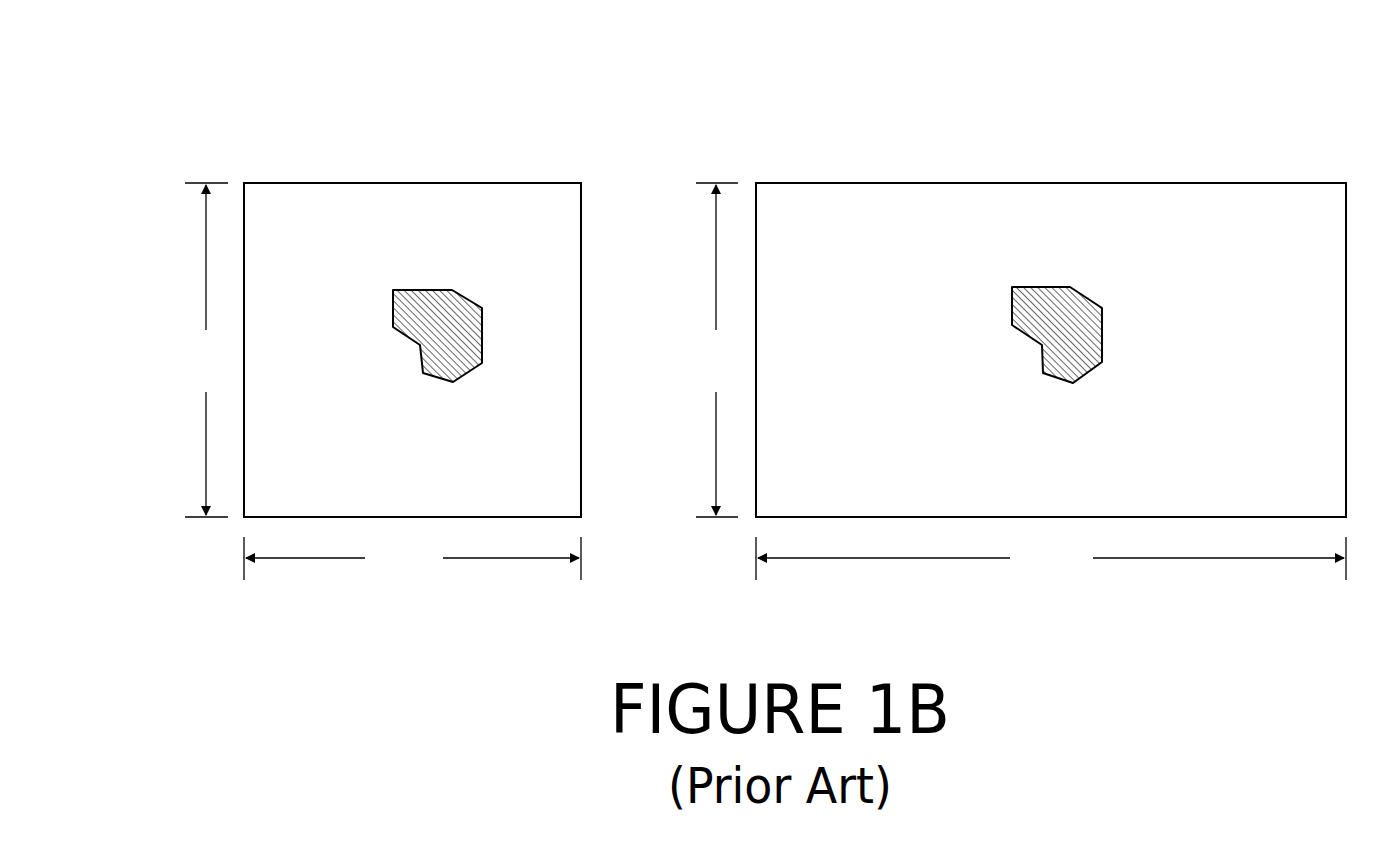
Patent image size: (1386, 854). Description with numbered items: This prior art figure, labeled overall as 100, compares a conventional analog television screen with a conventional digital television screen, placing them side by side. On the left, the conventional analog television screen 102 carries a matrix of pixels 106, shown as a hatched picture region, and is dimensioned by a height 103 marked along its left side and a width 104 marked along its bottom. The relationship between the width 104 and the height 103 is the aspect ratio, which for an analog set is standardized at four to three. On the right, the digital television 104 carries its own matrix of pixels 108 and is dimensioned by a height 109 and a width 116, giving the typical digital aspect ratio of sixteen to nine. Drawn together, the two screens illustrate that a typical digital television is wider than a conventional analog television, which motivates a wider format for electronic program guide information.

The prior art television display comparison 100 is at (165, 53).
The conventional analog television screen 102 is at (560, 492).
The height 103 is at (206, 350).
The width 104 is at (1325, 492).
The matrix of pixels 106 is at (441, 287).
The matrix of pixels 108 is at (1052, 285).
The height 109 is at (717, 350).
The width 116 is at (1051, 558).